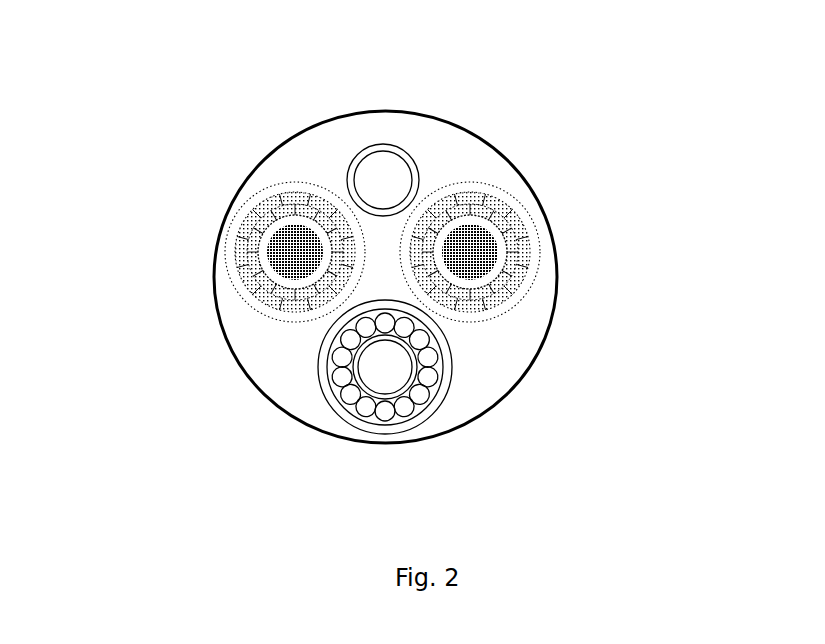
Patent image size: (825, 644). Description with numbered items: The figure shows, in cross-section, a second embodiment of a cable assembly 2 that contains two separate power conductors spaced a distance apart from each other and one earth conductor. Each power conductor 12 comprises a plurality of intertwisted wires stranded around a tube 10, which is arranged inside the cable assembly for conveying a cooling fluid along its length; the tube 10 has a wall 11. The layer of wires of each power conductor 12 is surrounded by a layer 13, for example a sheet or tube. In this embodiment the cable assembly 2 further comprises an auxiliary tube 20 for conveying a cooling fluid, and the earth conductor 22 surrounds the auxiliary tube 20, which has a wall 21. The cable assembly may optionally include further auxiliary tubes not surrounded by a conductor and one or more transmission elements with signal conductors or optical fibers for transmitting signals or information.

The cable assembly 2 is at (641, 155).
The tube 10 is at (280, 278).
The wall 11 is at (258, 249).
The power conductor 12 is at (287, 201).
The layer 13 is at (240, 275).
The auxiliary tube 20 is at (353, 365).
The wall 21 is at (374, 398).
The earth conductor 22 is at (388, 412).